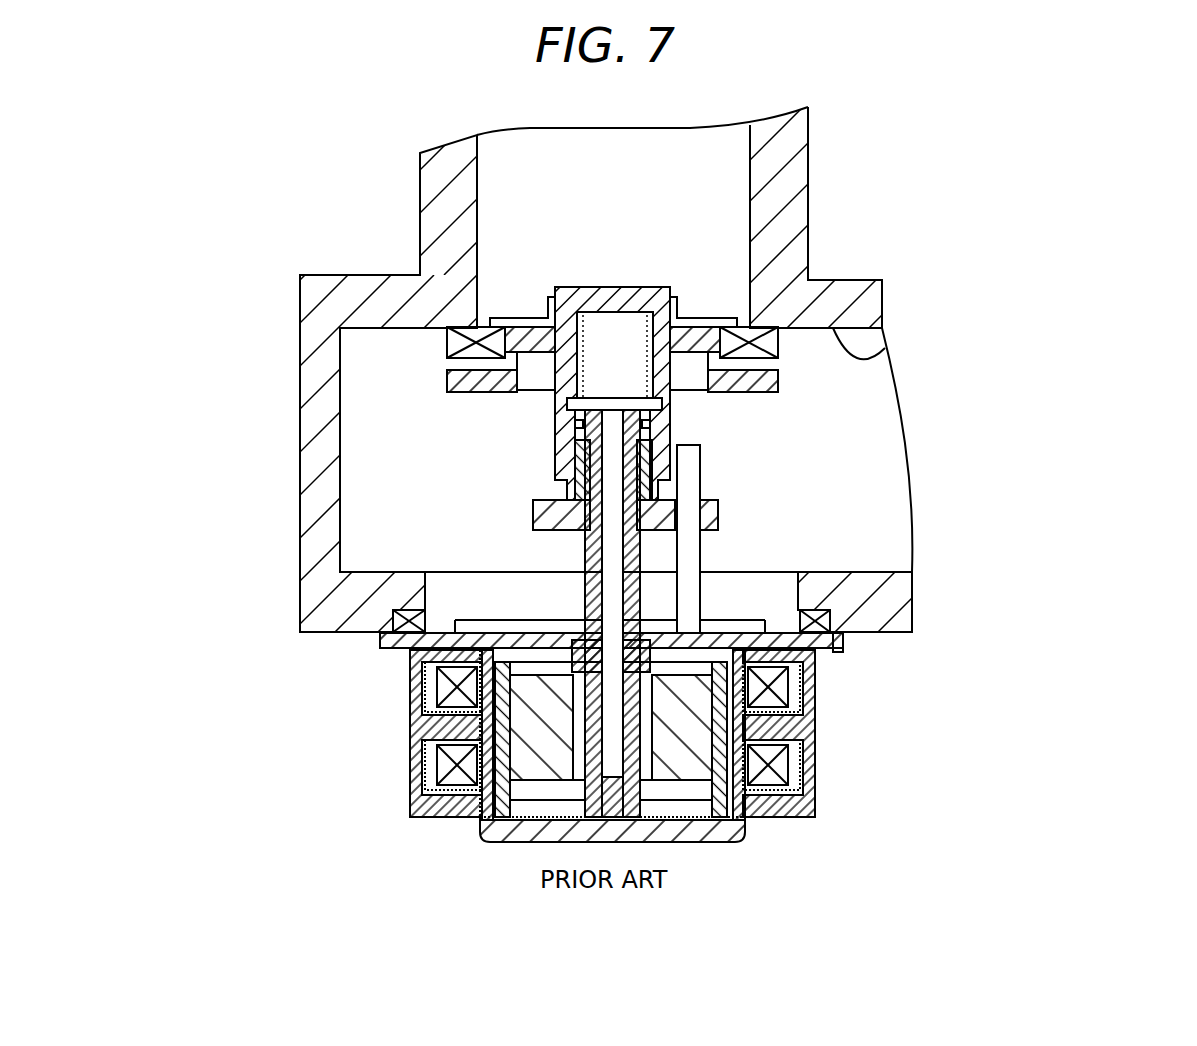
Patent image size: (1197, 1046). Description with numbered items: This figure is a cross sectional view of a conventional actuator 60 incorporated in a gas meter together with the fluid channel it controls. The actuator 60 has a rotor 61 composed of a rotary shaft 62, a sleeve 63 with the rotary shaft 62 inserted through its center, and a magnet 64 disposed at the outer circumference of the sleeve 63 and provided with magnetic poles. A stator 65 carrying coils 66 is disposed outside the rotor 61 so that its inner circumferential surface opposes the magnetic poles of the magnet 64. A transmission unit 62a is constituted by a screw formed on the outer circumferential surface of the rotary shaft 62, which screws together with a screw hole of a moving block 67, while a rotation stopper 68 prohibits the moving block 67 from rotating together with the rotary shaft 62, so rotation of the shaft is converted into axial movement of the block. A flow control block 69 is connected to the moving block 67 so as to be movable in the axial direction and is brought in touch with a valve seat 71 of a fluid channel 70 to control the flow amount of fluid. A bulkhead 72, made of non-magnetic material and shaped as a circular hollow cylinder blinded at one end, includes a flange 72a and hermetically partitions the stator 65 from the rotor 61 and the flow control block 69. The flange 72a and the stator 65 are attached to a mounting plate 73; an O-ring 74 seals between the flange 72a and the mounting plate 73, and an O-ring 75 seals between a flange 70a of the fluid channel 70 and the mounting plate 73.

The actuator 60 is at (728, 759).
The rotor 61 is at (642, 774).
The rotary shaft 62 is at (640, 843).
The transmission unit 62a is at (550, 432).
The sleeve 63 is at (682, 768).
The magnet 64 is at (815, 800).
The stator 65 is at (642, 739).
The coils 66 is at (820, 752).
The moving block 67 is at (532, 512).
The rotation stopper 68 is at (700, 553).
The flow control block 69 is at (770, 384).
The fluid channel 70 is at (385, 527).
The flange 70a is at (882, 603).
The valve seat 71 is at (885, 348).
The bulkhead 72 is at (417, 757).
The flange 72a is at (417, 680).
The mounting plate 73 is at (832, 645).
The O-ring 74 is at (385, 641).
The O-ring 75 is at (830, 632).